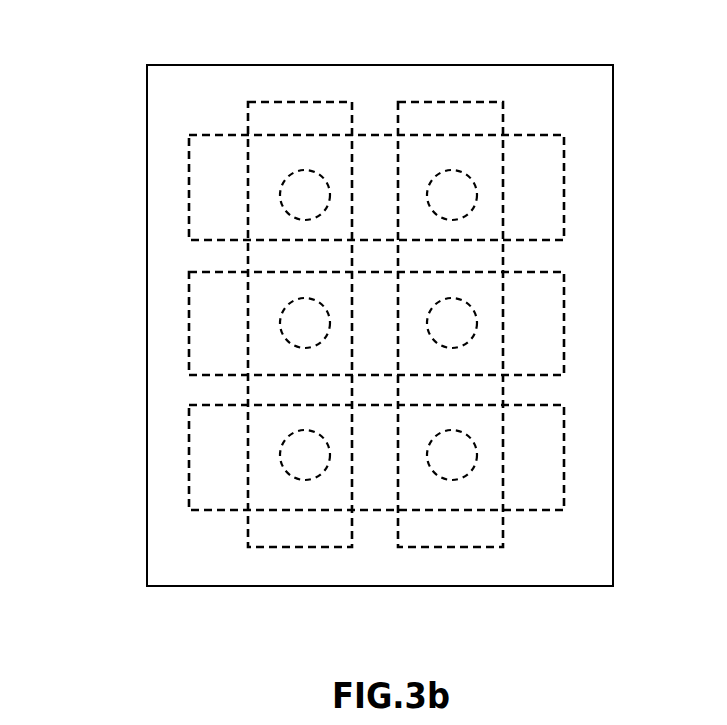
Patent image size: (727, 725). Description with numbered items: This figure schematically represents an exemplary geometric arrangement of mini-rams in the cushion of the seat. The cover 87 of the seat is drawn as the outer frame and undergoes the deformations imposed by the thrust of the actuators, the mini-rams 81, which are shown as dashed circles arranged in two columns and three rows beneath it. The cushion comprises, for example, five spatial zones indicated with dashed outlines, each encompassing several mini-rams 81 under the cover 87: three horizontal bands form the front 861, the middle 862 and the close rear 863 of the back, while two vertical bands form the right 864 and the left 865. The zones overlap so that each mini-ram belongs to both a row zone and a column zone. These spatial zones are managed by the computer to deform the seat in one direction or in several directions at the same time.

The mini-rams 81 is at (288, 440).
The cover 87 is at (548, 565).
The front zone 861 is at (210, 452).
The middle zone 862 is at (208, 295).
The close rear zone 863 is at (213, 182).
The right zone 864 is at (272, 118).
The left zone 865 is at (458, 123).